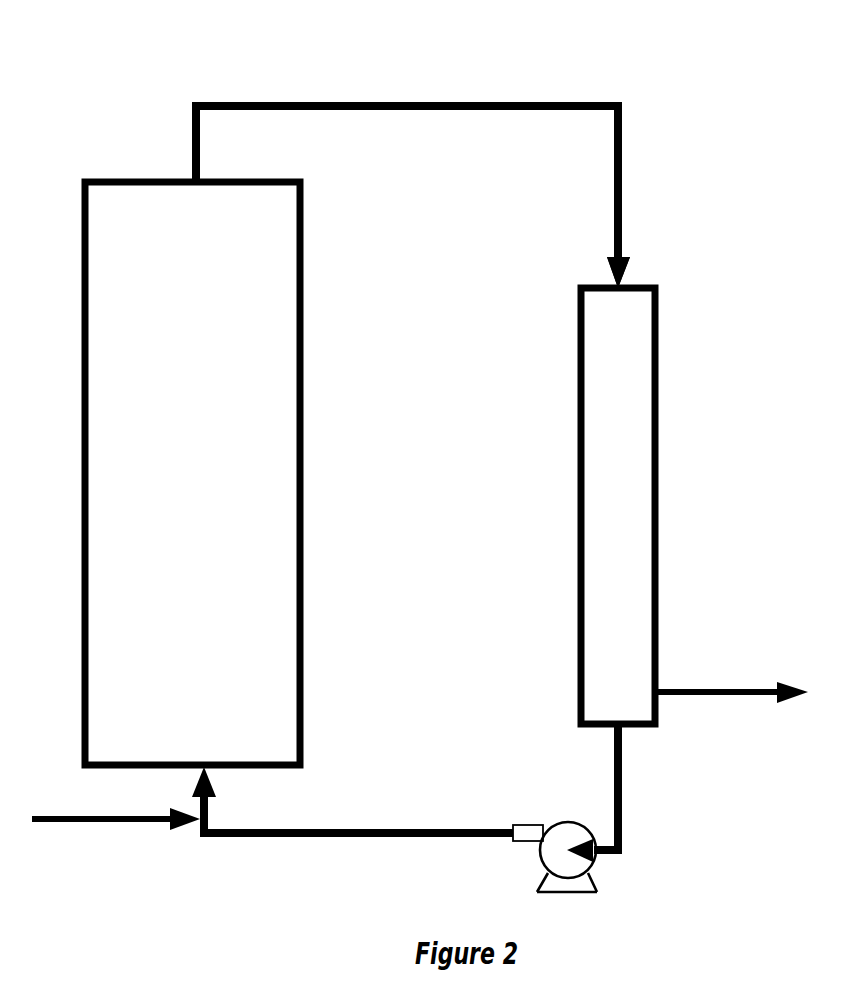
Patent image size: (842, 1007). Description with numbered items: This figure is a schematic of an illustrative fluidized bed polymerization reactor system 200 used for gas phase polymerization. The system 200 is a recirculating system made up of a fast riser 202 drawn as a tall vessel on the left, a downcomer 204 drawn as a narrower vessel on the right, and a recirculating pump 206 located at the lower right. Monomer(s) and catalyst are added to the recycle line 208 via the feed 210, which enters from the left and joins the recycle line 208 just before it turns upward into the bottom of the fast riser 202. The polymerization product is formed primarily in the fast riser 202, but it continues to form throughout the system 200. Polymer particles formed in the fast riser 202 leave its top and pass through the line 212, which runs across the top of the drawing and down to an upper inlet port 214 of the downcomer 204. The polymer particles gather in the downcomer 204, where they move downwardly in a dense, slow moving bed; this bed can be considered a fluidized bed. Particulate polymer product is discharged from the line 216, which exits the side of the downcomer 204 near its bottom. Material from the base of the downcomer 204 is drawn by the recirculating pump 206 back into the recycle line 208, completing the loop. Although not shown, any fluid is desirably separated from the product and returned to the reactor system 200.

The fluidized bed polymerization reactor system 200 is at (106, 120).
The fast riser 202 is at (81, 295).
The downcomer 204 is at (658, 462).
The recirculating pump 206 is at (567, 823).
The recycle line 208 is at (300, 837).
The feed 210 is at (107, 824).
The line 212 is at (548, 103).
The upper inlet port 214 is at (622, 287).
The line 216 is at (715, 694).